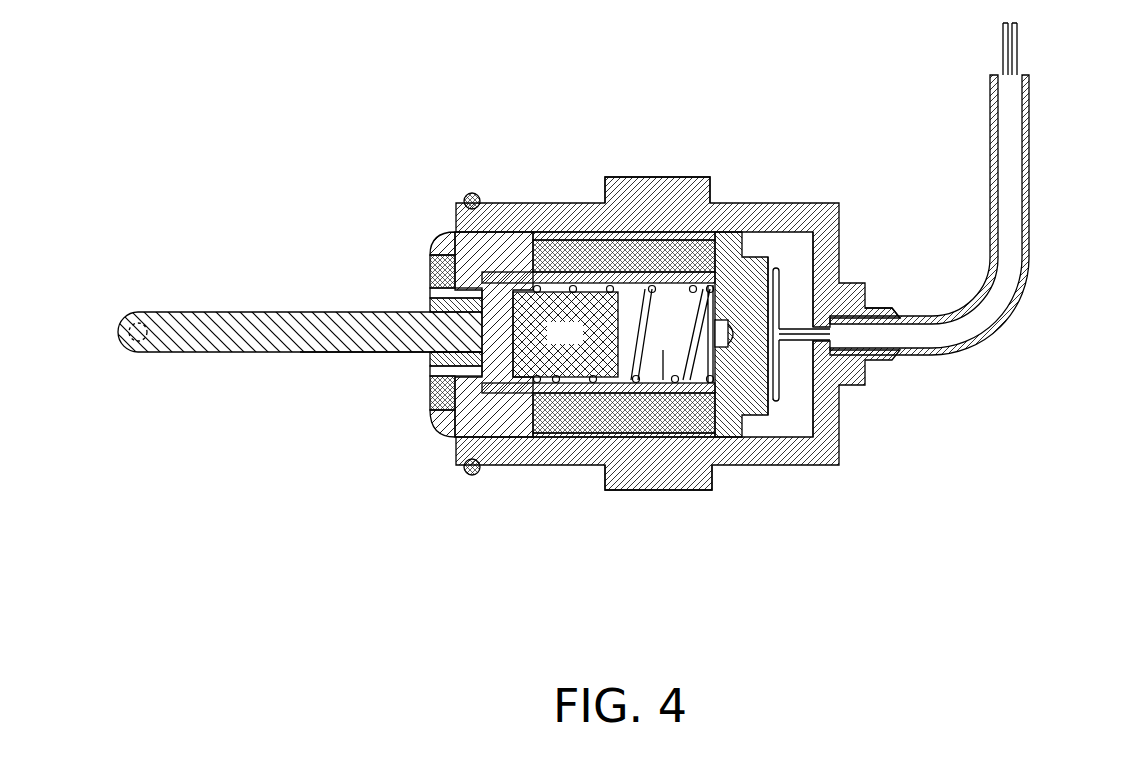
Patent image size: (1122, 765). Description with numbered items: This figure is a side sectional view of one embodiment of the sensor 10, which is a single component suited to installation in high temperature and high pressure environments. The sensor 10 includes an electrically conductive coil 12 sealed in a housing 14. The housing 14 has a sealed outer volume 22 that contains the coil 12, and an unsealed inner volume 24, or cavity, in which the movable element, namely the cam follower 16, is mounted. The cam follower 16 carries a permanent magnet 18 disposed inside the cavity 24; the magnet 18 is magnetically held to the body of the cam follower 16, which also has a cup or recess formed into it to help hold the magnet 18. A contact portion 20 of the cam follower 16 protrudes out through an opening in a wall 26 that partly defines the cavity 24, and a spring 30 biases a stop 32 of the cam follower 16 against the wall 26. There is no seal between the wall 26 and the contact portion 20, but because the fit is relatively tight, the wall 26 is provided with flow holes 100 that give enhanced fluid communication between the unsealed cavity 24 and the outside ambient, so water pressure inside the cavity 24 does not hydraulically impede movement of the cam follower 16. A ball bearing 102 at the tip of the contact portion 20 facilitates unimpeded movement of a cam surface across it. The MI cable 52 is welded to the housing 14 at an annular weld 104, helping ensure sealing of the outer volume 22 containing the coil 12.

The sensor 10 is at (857, 553).
The electrically conductive coil 12 is at (657, 210).
The housing 14 is at (742, 208).
The cam follower 16 is at (362, 364).
The permanent magnet 18 is at (565, 334).
The contact portion 20 is at (228, 353).
The sealed outer volume 22 is at (840, 466).
The unsealed inner volume 24 is at (623, 486).
The wall 26 is at (440, 262).
The spring 30 is at (614, 210).
The stop 32 is at (490, 205).
The MI cable 52 is at (1010, 198).
The flow holes 100 is at (430, 295).
The ball bearing 102 is at (142, 328).
The annular weld 104 is at (906, 316).